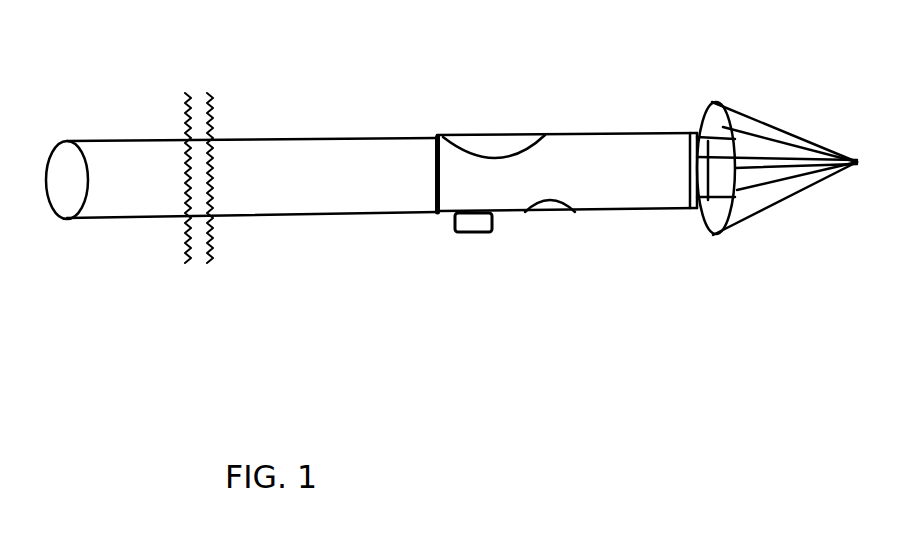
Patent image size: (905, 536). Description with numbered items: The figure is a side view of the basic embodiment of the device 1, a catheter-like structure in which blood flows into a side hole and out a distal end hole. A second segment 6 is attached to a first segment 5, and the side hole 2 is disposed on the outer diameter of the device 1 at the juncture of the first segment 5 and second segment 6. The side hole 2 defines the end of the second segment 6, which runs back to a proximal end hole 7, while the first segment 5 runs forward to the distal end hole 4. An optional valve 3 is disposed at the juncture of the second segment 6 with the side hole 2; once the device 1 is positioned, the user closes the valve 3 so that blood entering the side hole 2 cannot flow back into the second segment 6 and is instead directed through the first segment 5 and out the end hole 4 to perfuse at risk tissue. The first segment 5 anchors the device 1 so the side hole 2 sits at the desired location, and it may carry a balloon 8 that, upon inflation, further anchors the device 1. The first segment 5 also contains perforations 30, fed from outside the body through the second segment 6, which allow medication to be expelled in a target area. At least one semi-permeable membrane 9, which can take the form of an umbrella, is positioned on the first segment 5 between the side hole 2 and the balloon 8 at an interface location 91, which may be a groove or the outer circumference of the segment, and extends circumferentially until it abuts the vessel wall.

The device 1 is at (446, 233).
The side hole 2 is at (510, 142).
The valve 3 is at (432, 182).
The distal end hole 4 is at (777, 206).
The first segment 5 is at (608, 132).
The second segment 6 is at (147, 142).
The proximal end hole 7 is at (63, 183).
The balloon 8 is at (465, 233).
The semi-permeable membrane 9 is at (743, 158).
The perforations 30 is at (548, 205).
The interface location 91 is at (705, 213).